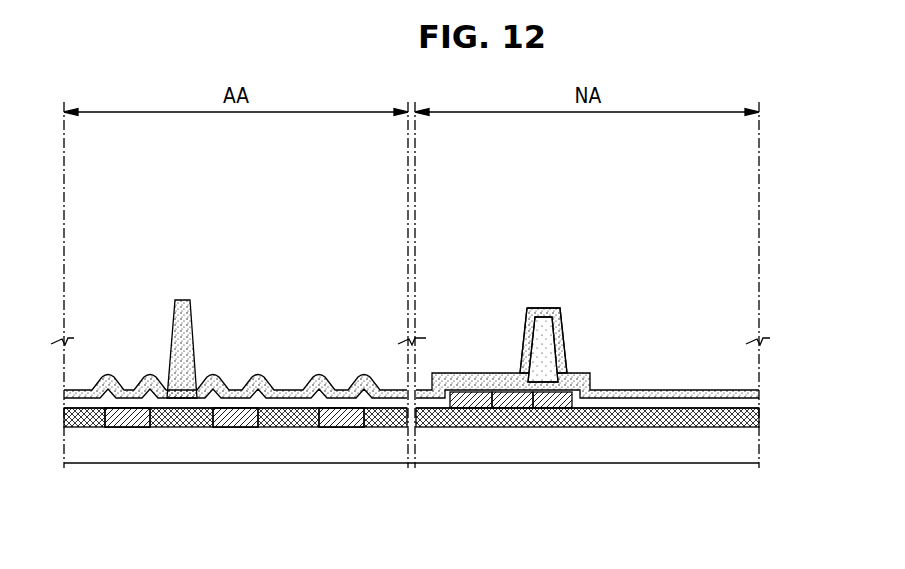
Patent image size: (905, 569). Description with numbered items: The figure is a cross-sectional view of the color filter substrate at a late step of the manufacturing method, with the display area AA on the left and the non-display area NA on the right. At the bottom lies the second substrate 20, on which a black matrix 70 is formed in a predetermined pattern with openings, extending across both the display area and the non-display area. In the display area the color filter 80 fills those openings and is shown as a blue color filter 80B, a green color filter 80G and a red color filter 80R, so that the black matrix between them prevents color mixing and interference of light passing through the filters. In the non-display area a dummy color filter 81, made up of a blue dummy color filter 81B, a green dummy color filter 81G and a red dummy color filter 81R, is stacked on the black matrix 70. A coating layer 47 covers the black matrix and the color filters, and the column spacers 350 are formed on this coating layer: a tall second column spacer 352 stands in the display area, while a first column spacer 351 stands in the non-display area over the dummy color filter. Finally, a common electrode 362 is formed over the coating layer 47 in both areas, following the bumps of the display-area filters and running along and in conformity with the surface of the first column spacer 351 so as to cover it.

The second substrate 20 is at (753, 443).
The black matrix 70 is at (753, 417).
The color filter 80 is at (234, 481).
The blue color filter 80B is at (132, 418).
The green color filter 80G is at (235, 418).
The red color filter 80R is at (338, 418).
The dummy color filter 81 is at (511, 473).
The blue dummy color filter 81B is at (470, 404).
The green dummy color filter 81G is at (515, 404).
The red dummy color filter 81R is at (555, 404).
The coating layer 47 is at (753, 405).
The common electrode 362 is at (753, 397).
The column spacers 350 is at (367, 268).
The first column spacer 351 is at (498, 281).
The second column spacer 352 is at (183, 298).